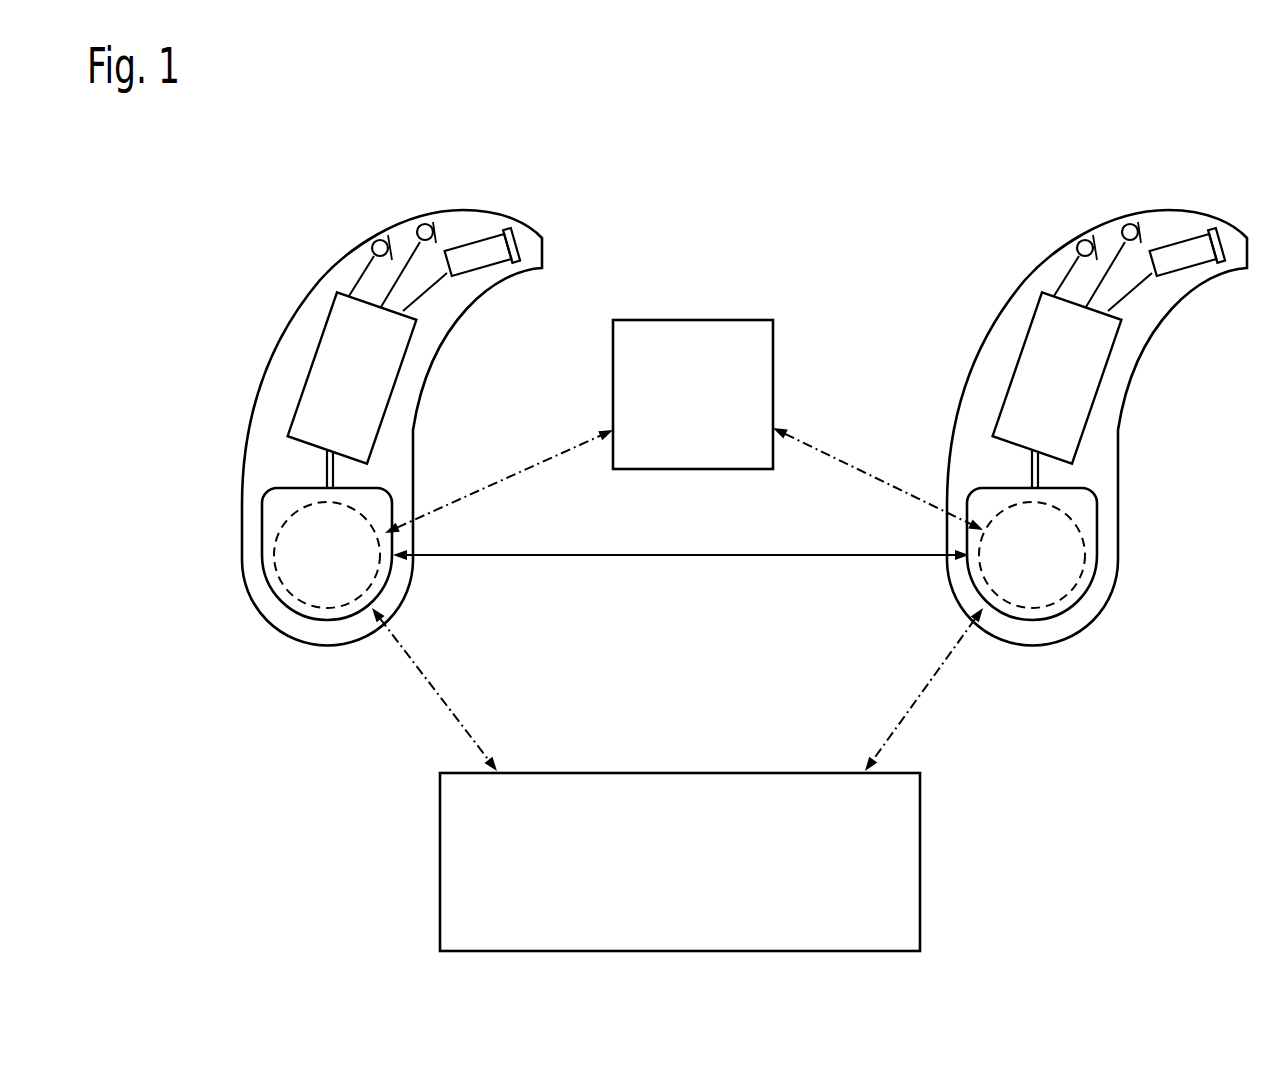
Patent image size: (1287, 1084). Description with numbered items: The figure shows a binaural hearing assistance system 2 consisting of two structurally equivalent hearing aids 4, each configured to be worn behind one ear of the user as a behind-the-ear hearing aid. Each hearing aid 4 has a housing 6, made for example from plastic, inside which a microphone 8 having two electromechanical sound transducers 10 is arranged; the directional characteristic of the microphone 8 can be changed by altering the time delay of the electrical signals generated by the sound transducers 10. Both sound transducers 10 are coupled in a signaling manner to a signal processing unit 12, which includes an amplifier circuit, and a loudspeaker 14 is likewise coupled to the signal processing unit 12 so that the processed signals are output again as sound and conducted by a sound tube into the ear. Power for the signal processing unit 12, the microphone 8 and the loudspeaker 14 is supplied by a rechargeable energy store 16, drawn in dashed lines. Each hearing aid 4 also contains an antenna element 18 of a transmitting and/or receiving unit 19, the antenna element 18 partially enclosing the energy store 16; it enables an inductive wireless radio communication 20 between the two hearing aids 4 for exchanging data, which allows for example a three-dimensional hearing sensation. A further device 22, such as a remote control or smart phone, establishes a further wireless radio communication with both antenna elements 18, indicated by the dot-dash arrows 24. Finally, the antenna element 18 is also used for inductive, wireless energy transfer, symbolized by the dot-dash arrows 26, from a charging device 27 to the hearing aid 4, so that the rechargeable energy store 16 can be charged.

The hearing assistance system 2 is at (779, 150).
The hearing aid 4 is at (290, 262).
The housing 6 is at (259, 376).
The microphone 8 is at (762, 166).
The electromechanical sound transducer 10 is at (371, 238).
The signal processing unit 12 is at (391, 400).
The loudspeaker 14 is at (487, 273).
The rechargeable energy store 16 is at (273, 557).
The antenna element 18 is at (679, 526).
The transmitting and/or receiving unit 19 is at (272, 468).
The wireless radio communication 20 is at (692, 560).
The further device 22 is at (920, 855).
The dot-dash arrows 24 is at (427, 683).
The dot-dash arrows 26 is at (530, 463).
The charging device 27 is at (691, 320).